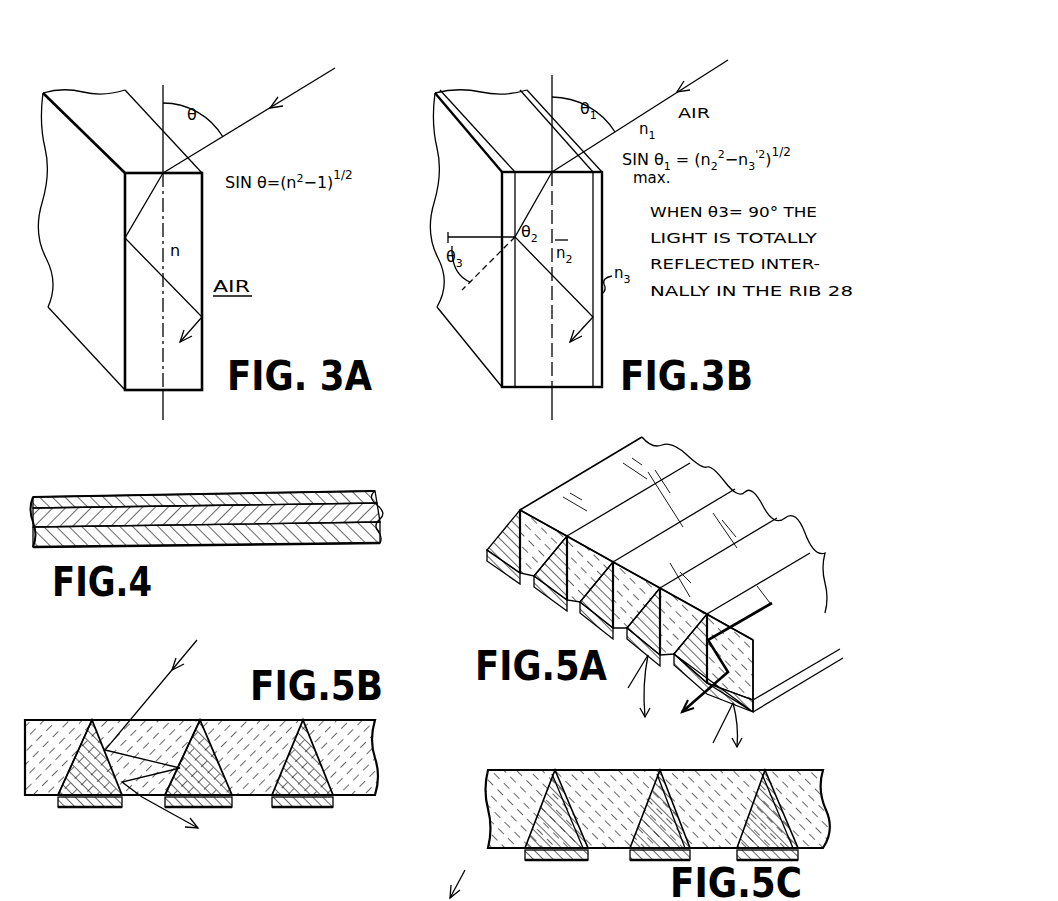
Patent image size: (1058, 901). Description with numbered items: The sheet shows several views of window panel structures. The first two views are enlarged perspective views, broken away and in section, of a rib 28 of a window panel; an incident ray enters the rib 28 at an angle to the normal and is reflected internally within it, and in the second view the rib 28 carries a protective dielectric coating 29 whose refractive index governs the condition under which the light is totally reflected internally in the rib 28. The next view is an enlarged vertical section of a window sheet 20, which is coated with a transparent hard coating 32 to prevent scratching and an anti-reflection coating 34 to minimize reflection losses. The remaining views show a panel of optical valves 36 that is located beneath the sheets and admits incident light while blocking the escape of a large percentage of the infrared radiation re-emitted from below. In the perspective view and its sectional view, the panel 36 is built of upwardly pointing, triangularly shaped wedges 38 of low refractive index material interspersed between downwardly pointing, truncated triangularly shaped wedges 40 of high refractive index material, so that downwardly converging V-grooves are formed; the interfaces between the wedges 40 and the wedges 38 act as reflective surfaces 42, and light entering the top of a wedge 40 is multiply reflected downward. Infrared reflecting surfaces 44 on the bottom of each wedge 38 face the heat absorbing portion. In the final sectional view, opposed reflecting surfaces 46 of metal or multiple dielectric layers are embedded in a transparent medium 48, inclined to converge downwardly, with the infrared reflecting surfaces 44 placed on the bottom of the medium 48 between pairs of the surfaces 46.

In FIG. 4, the sheet 20 is at (225, 517).
In FIG. 3A, the rib 28 is at (122, 112).
In FIG. 3B, the rib 28 is at (497, 100).
In FIG. 3B, the protective dielectric coating 29 is at (596, 244).
In FIG. 4, the transparent hard coating 32 is at (370, 508).
In FIG. 4, the anti-reflection coating 34 is at (297, 493).
In FIG. 5A, the panel of optical valves 36 is at (649, 565).
In FIG. 5C, the panel of optical valves 36 is at (668, 798).
In FIG. 5B, the upwardly pointing triangularly shaped wedge 38 is at (92, 720).
In FIG. 5A, the upwardly pointing triangularly shaped wedge 38 is at (502, 537).
In FIG. 5B, the downwardly pointing truncated triangularly shaped wedge 40 is at (157, 735).
In FIG. 5A, the downwardly pointing truncated triangularly shaped wedge 40 is at (577, 493).
In FIG. 5B, the reflective surface 42 is at (100, 720).
In FIG. 5B, the infrared reflecting surface 44 is at (105, 807).
In FIG. 5A, the infrared reflecting surface 44 is at (522, 580).
In FIG. 5C, the infrared reflecting surface 44 is at (548, 860).
In FIG. 5C, the opposed reflecting surface 46 is at (563, 768).
In FIG. 5C, the transparent medium 48 is at (597, 787).